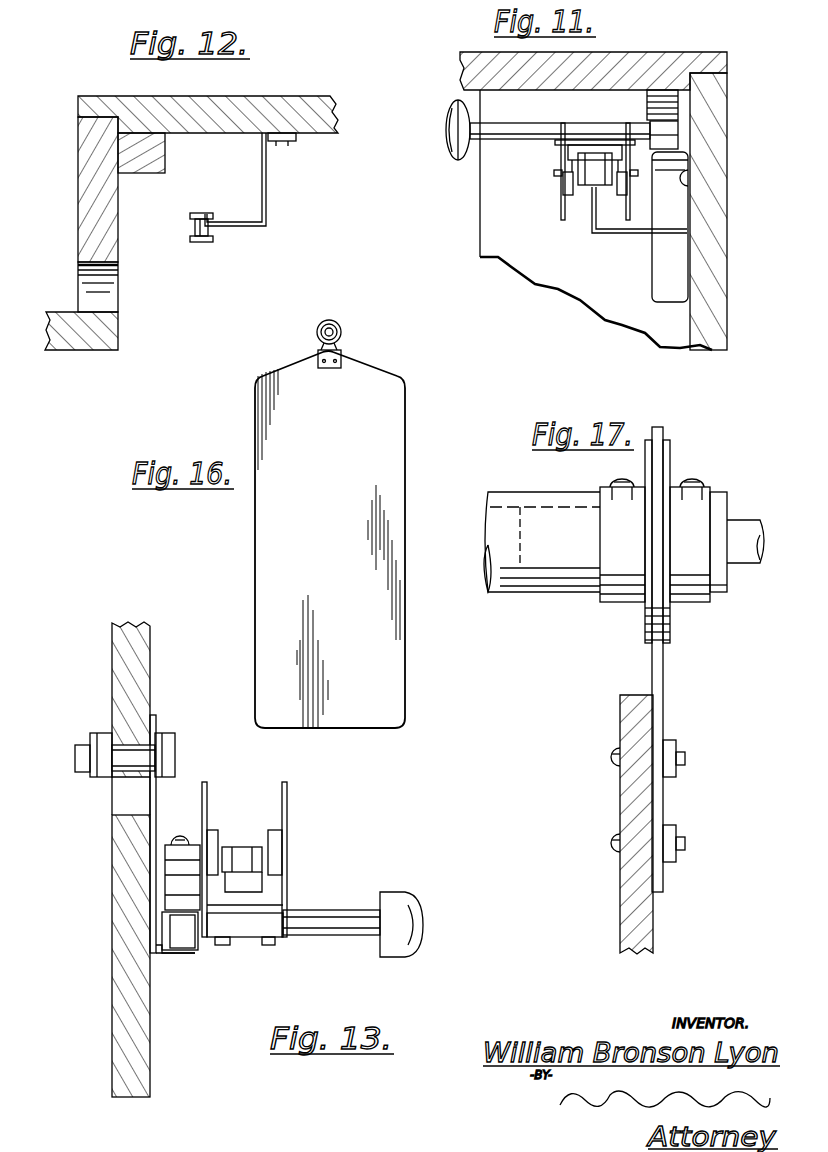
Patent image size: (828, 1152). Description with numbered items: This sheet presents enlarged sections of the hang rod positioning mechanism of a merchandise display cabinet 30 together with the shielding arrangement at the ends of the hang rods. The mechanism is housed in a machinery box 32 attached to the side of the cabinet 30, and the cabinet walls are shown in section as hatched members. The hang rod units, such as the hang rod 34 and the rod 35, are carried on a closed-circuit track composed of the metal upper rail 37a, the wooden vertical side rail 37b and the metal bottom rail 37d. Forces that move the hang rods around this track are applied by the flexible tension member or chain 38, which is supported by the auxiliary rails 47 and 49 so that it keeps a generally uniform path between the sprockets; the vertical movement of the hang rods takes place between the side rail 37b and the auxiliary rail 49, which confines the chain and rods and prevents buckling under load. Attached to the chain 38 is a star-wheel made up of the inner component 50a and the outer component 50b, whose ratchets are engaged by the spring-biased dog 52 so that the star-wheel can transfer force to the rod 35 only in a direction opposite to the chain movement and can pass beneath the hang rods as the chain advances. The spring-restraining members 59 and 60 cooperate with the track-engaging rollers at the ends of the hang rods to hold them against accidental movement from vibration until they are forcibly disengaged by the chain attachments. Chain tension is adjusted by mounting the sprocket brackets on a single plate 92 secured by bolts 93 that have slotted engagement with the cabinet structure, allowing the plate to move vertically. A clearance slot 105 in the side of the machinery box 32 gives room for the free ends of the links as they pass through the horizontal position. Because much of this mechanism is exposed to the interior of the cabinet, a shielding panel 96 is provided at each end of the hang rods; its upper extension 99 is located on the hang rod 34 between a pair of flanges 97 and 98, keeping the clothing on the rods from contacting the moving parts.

In FIG. 12, the cabinet 30 is at (118, 340).
In FIG. 12, the machinery box 32 is at (78, 212).
In FIG. 13, the hang rod 34 is at (270, 943).
In FIG. 17, the hang rod 34 is at (520, 595).
In FIG. 11, the hang rod unit 35 is at (528, 130).
In FIG. 11, the upper rail 37a is at (682, 150).
In FIG. 12, the vertical side rail 37b is at (165, 153).
In FIG. 13, the bottom rail 37d is at (165, 956).
In FIG. 12, the chain 38 is at (190, 228).
In FIG. 11, the chain 38 is at (578, 178).
In FIG. 13, the chain 38 is at (238, 852).
In FIG. 11, the auxiliary rail 47 is at (590, 218).
In FIG. 12, the auxiliary rail 49 is at (266, 210).
In FIG. 11, the inner star-wheel component 50a is at (562, 222).
In FIG. 13, the inner star-wheel component 50a is at (288, 793).
In FIG. 11, the outer star-wheel component 50b is at (627, 222).
In FIG. 13, the outer star-wheel component 50b is at (218, 786).
In FIG. 13, the dog 52 is at (260, 902).
In FIG. 13, the spring-restraining member 59 is at (165, 876).
In FIG. 13, the spring-restraining member 60 is at (195, 946).
In FIG. 13, the plate 92 is at (157, 797).
In FIG. 13, the bolt 93 is at (178, 746).
In FIG. 16, the shielding panel 96 is at (393, 417).
In FIG. 17, the shielding panel 96 is at (620, 798).
In FIG. 17, the flange 97 is at (623, 612).
In FIG. 17, the flange 98 is at (668, 612).
In FIG. 17, the upper extension 99 is at (664, 678).
In FIG. 12, the clearance slot 105 is at (118, 272).